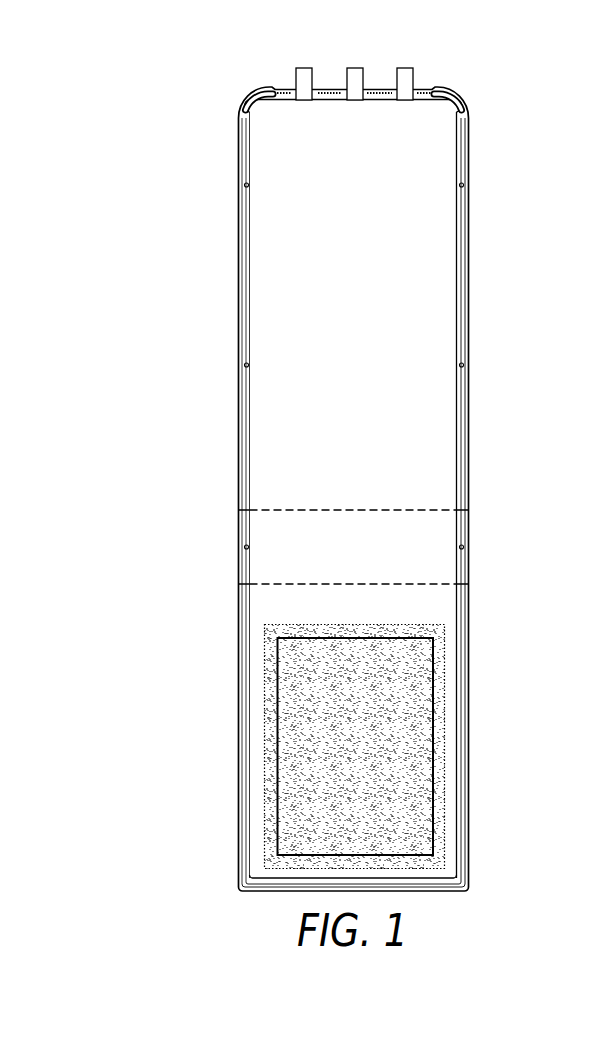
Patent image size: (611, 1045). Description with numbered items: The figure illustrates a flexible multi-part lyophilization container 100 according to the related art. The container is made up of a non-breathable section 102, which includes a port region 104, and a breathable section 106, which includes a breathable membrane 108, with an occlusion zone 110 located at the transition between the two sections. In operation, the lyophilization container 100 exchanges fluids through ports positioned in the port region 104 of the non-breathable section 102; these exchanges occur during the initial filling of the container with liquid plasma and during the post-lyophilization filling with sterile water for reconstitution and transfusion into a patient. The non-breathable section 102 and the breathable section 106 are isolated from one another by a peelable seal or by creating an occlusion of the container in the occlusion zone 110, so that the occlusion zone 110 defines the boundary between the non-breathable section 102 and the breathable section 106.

The lyophilization container 100 is at (340, 460).
The non-breathable section 102 is at (486, 293).
The port region 104 is at (337, 62).
The breathable section 106 is at (385, 746).
The breathable membrane 108 is at (300, 757).
The occlusion zone 110 is at (486, 548).